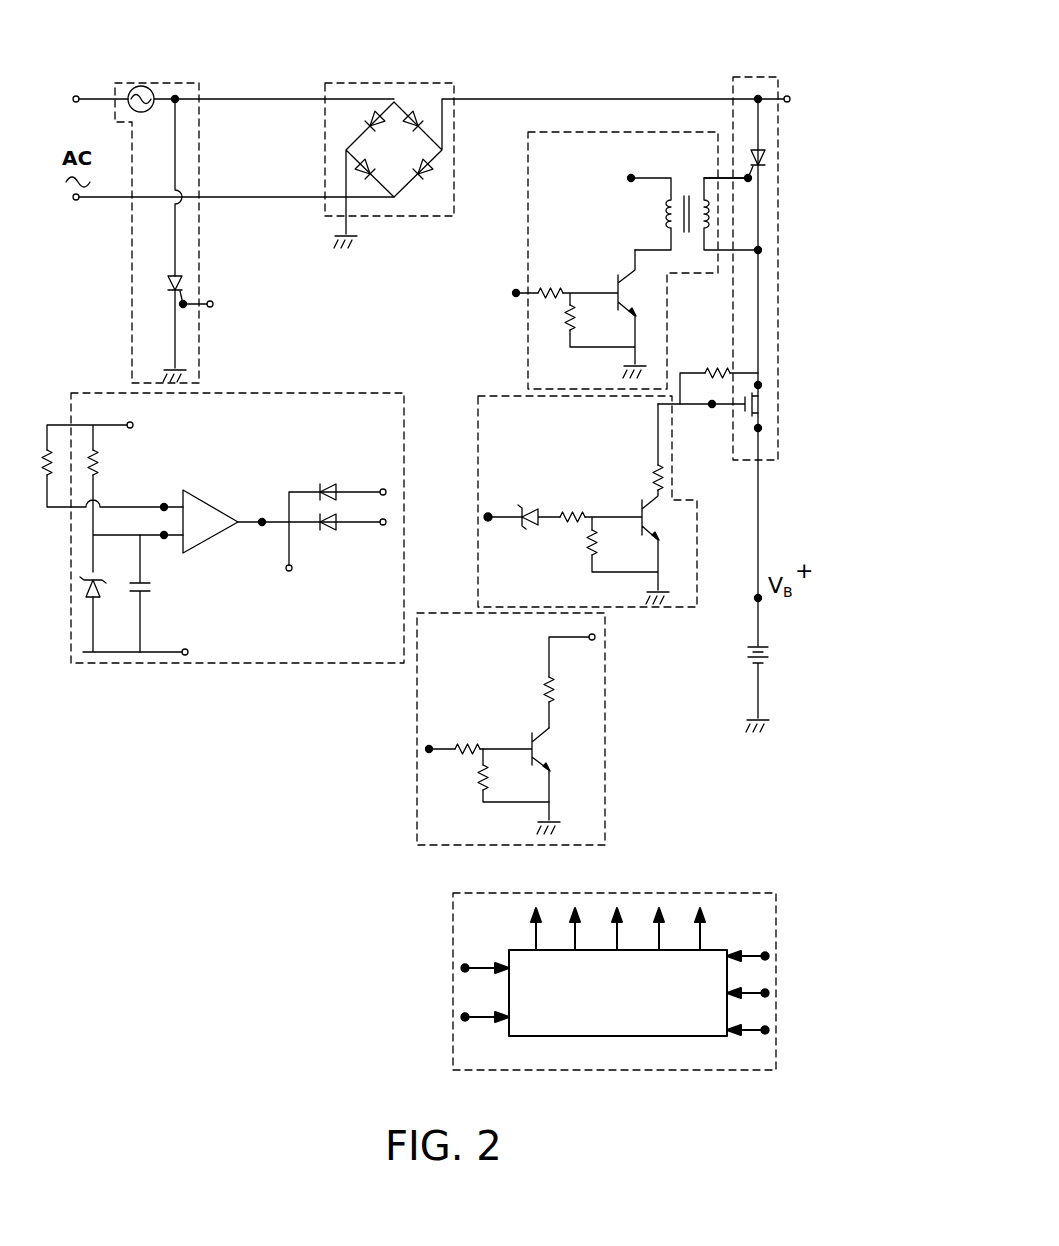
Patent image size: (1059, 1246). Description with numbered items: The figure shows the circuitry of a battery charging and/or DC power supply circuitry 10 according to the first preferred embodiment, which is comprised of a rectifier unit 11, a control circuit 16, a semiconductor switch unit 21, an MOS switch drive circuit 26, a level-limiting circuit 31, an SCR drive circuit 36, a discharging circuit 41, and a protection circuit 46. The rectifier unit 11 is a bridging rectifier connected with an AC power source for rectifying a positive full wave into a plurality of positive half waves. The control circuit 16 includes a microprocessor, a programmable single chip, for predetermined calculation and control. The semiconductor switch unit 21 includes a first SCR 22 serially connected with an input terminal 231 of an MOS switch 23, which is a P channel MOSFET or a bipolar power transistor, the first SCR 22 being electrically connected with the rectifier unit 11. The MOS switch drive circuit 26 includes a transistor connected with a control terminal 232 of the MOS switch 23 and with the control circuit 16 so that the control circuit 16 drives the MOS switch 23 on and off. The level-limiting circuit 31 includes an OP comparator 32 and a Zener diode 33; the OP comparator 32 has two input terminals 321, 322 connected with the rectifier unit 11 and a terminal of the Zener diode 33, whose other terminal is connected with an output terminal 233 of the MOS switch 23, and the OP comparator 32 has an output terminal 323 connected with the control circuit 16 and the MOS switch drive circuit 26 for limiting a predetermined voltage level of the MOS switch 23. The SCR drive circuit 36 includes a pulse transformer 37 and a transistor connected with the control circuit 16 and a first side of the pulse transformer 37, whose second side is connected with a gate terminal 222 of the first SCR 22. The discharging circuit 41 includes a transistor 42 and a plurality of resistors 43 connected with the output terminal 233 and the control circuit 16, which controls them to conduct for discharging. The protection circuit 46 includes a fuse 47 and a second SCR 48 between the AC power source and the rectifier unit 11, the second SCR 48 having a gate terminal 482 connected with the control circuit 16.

The battery charging and/or DC power supply circuitry 10 is at (210, 877).
The rectifier unit 11 is at (392, 83).
The control circuit 16 is at (455, 978).
The semiconductor switch unit 21 is at (757, 77).
The first SCR 22 is at (766, 160).
The gate terminal of the first SCR 222 is at (752, 180).
The MOS switch 23 is at (770, 415).
The input terminal of the MOS switch 231 is at (760, 386).
The control terminal of the MOS switch 232 is at (713, 406).
The output terminal of the MOS switch 233 is at (760, 430).
The MOS switch drive circuit 26 is at (498, 395).
The level-limiting circuit 31 is at (178, 663).
The OP comparator 32 is at (220, 540).
The input terminal of the OP comparator 321 is at (164, 507).
The input terminal of the OP comparator 322 is at (164, 535).
The output terminal of the OP comparator 323 is at (262, 522).
The Zener diode 33 is at (83, 587).
The SCR drive circuit 36 is at (527, 220).
The pulse transformer 37 is at (687, 180).
The discharging circuit 41 is at (415, 762).
The transistor 42 is at (556, 757).
The resistors 43 is at (550, 702).
The protection circuit 46 is at (198, 83).
The fuse 47 is at (152, 92).
The second SCR 48 is at (165, 283).
The gate terminal of the second SCR 482 is at (184, 303).